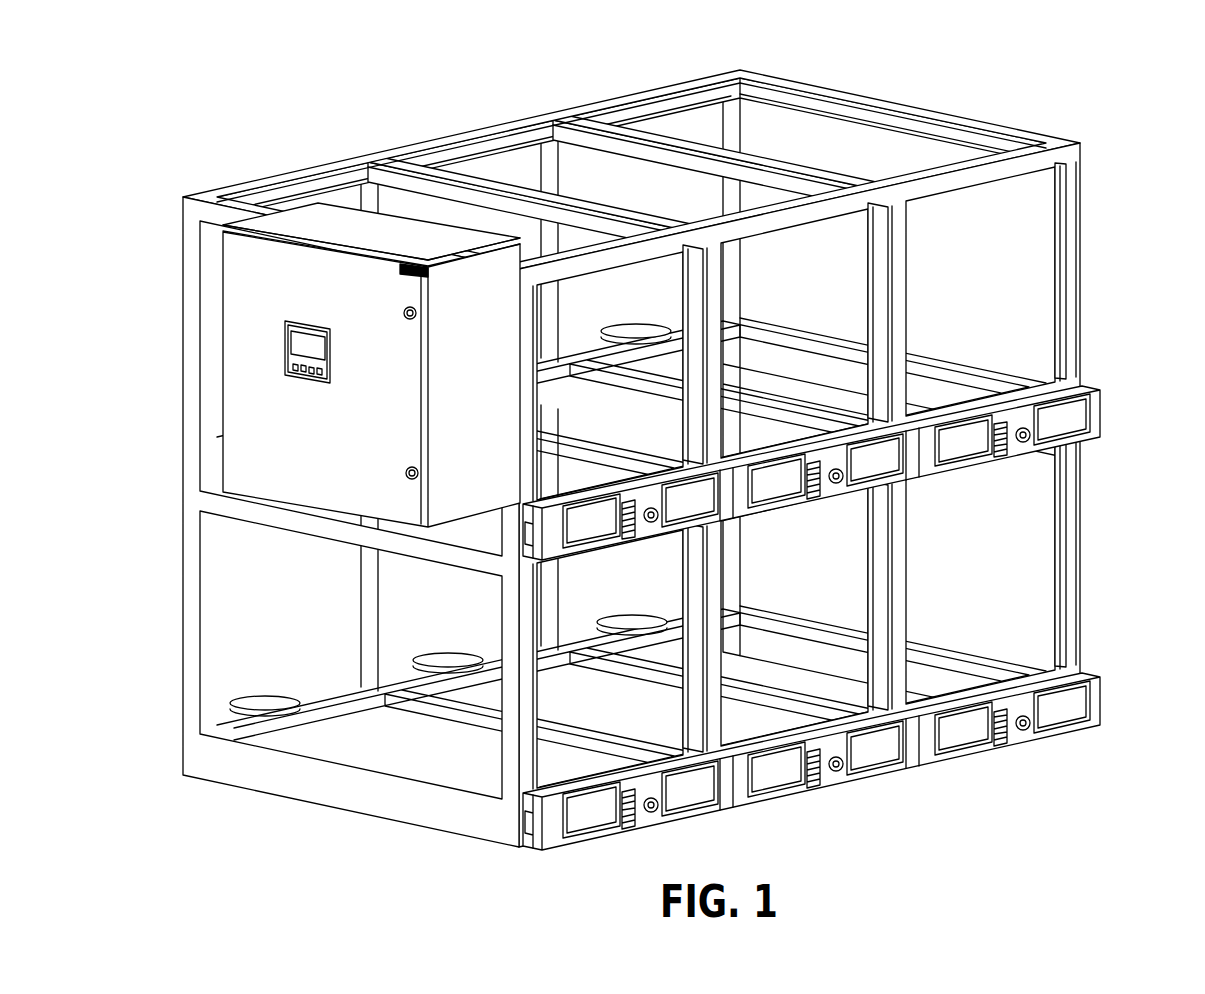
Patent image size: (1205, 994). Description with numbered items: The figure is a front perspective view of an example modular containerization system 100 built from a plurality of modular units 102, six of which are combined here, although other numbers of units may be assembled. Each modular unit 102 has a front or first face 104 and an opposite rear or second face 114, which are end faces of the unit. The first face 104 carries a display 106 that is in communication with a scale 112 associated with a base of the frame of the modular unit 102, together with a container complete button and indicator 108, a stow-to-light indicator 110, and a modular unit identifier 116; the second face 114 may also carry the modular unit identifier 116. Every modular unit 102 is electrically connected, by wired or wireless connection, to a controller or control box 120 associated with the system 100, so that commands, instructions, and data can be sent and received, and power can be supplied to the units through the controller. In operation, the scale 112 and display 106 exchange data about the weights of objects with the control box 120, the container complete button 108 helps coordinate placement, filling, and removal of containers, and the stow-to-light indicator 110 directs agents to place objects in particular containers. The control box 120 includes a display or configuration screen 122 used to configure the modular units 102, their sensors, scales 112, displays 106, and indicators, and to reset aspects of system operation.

The modular containerization system 100 is at (688, 438).
The modular unit 102 is at (276, 162).
The first face 104 is at (859, 599).
The display 106 is at (958, 456).
The container complete button and indicator 108 is at (1026, 443).
The stow-to-light indicator 110 is at (1080, 420).
The scale 112 is at (769, 367).
The second face 114 is at (628, 324).
The modular unit identifier 116 is at (1002, 459).
The control box 120 is at (371, 365).
The configuration screen 122 is at (332, 354).